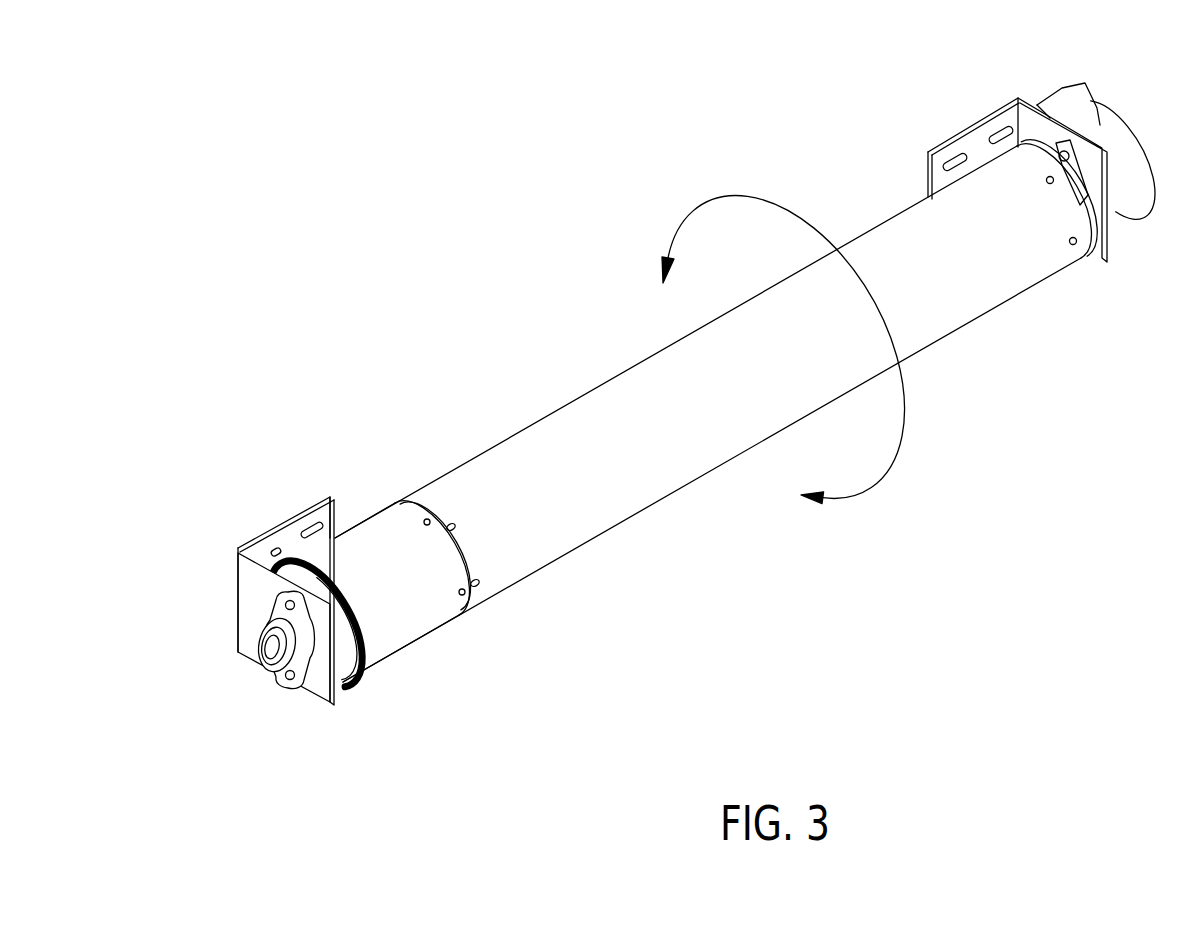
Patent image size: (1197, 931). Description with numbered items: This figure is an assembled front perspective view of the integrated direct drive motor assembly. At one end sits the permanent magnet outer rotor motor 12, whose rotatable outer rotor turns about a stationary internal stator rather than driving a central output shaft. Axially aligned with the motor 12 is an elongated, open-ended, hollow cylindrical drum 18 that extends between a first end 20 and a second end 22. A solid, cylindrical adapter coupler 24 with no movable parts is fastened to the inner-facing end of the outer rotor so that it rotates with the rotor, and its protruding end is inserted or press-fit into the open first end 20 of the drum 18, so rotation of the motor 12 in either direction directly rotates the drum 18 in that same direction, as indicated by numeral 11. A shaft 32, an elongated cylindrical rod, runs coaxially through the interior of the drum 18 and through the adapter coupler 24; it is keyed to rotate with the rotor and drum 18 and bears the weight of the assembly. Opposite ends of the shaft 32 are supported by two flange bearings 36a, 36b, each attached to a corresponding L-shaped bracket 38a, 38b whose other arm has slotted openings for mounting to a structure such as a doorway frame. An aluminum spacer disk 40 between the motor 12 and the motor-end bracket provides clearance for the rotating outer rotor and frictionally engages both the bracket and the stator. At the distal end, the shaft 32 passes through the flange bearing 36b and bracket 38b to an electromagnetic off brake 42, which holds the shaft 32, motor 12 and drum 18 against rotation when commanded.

The rotation direction indicator 11 is at (733, 196).
The permanent magnet outer rotor motor 12 is at (423, 600).
The hollow cylindrical drum 18 is at (727, 443).
The first end of drum 20 is at (440, 495).
The second end of drum 22 is at (1078, 213).
The adapter coupler 24 is at (410, 503).
The shaft 32 is at (268, 650).
The flange bearing 36a is at (320, 700).
The flange bearing 36b is at (1052, 132).
The L-shaped bracket 38a is at (288, 538).
The L-shaped bracket 38b is at (975, 145).
The aluminum spacer disk 40 is at (338, 682).
The electromagnetic off brake 42 is at (1115, 132).